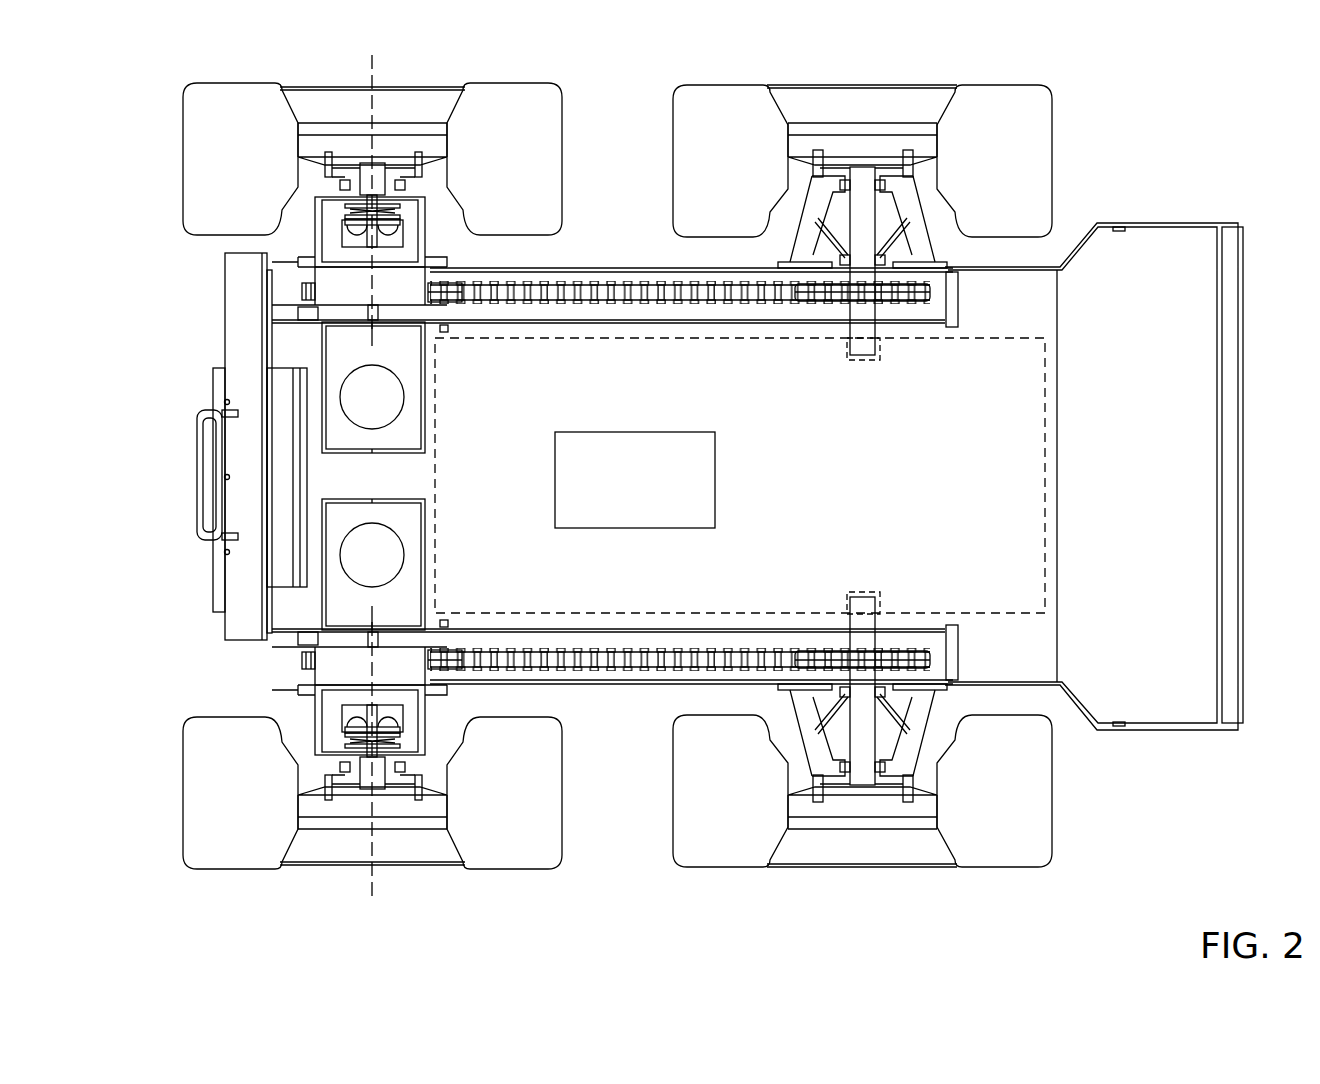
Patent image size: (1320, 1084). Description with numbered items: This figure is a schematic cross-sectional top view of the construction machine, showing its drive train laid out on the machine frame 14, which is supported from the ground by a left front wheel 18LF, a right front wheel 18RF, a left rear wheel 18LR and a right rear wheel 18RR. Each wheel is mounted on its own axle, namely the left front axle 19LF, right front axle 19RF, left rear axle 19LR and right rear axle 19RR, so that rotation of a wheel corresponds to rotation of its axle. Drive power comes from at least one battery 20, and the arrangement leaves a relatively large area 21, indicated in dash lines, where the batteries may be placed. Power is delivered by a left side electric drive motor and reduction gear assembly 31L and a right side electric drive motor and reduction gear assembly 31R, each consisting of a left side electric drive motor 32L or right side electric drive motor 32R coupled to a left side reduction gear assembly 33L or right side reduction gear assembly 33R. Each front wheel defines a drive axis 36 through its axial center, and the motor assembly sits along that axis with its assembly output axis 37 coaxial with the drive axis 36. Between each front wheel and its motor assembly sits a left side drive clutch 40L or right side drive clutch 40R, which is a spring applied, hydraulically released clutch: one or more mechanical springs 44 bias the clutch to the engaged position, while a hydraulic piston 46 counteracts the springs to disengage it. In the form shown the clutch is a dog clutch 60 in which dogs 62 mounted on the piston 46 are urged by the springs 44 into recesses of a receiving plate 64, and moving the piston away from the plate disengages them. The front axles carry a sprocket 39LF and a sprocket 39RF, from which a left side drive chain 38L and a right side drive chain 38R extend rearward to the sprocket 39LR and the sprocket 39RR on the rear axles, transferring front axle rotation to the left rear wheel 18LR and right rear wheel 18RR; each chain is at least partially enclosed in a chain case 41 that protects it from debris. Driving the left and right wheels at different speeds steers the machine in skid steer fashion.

The machine frame 14 is at (248, 372).
The right front wheel 18RF is at (545, 103).
The left front wheel 18LF is at (545, 849).
The right rear wheel 18RR is at (1022, 150).
The left rear wheel 18LR is at (1022, 802).
The right front axle 19RF is at (378, 172).
The left front axle 19LF is at (378, 780).
The right rear axle 19RR is at (858, 333).
The left rear axle 19LR is at (858, 619).
The battery 20 is at (628, 491).
The area 21 is at (1048, 436).
The right side electric drive motor and reduction gear assembly 31R is at (352, 292).
The left side electric drive motor and reduction gear assembly 31L is at (352, 660).
The right side electric drive motor 32R is at (405, 394).
The left side electric drive motor 32L is at (405, 558).
The right side reduction gear assembly 33R is at (337, 257).
The left side reduction gear assembly 33L is at (337, 695).
The drive axis 36 is at (370, 68).
The assembly output axis 37 is at (375, 283).
The right side drive chain 38R is at (580, 283).
The left side drive chain 38L is at (580, 669).
The sprocket of the right front axle 39RF is at (447, 292).
The sprocket of the left front axle 39LF is at (447, 660).
The sprocket of the right rear axle 39RR is at (895, 293).
The sprocket of the left rear axle 39LR is at (895, 659).
The right side drive clutch 40R is at (335, 207).
The left side drive clutch 40L is at (335, 746).
The chain case 41 is at (660, 268).
The mechanical spring 44 is at (365, 208).
The hydraulic piston 46 is at (400, 217).
The dog clutch 60 is at (308, 476).
The dog 62 is at (388, 235).
The receiving plate 64 is at (400, 226).